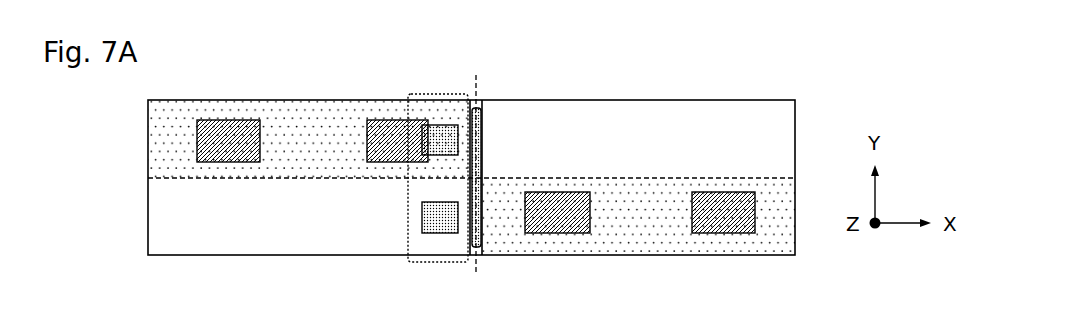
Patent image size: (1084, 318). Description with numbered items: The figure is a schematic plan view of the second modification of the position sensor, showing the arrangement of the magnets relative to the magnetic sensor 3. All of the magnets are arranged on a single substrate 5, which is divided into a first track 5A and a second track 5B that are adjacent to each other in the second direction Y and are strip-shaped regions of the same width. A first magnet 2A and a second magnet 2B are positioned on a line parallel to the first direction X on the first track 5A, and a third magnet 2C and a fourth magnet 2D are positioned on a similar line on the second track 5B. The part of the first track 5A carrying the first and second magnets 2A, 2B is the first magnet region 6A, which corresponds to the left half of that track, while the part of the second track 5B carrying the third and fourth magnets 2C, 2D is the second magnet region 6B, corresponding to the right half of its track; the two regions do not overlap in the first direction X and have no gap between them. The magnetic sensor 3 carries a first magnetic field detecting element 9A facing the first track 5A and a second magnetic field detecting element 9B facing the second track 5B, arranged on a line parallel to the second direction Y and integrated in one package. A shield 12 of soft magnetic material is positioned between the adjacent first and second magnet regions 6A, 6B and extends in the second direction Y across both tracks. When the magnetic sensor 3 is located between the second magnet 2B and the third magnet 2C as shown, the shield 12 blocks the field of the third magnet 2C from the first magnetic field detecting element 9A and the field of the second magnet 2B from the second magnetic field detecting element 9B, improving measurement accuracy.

The first magnet 2A is at (218, 162).
The second magnet 2B is at (393, 162).
The third magnet 2C is at (563, 233).
The fourth magnet 2D is at (725, 233).
The magnetic sensor 3 is at (440, 94).
The substrate 5 is at (87, 128).
The first track 5A is at (135, 100).
The second track 5B is at (135, 180).
The first magnet region 6A is at (280, 158).
The second magnet region 6B is at (648, 223).
The first magnetic field detecting element 9A is at (432, 130).
The second magnetic field detecting element 9B is at (477, 108).
The shield 12 is at (448, 202).